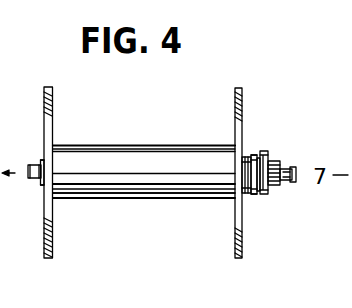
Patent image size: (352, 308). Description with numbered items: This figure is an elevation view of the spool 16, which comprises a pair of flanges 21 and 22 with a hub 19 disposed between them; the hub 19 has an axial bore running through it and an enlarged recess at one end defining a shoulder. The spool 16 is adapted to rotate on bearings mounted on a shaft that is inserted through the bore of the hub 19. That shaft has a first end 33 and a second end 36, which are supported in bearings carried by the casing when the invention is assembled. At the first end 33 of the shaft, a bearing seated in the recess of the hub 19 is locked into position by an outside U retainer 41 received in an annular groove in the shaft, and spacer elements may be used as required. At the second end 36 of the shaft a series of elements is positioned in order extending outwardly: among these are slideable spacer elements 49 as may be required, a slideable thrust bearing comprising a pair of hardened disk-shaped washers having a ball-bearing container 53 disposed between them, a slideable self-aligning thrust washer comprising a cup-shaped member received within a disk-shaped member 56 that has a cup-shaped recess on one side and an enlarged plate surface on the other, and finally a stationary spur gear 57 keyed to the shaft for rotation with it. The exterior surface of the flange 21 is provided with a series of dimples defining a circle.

The spool 16 is at (131, 142).
The hub 19 is at (92, 199).
The flange 21 is at (53, 103).
The flange 22 is at (235, 222).
The first end 33 is at (34, 165).
The second end 36 is at (293, 180).
The outside U retainer 41 is at (40, 184).
The spacer elements 49 is at (250, 196).
The ball-bearing container 53 is at (253, 155).
The disk-shaped member 56 is at (264, 151).
The stationary spur gear 57 is at (280, 160).